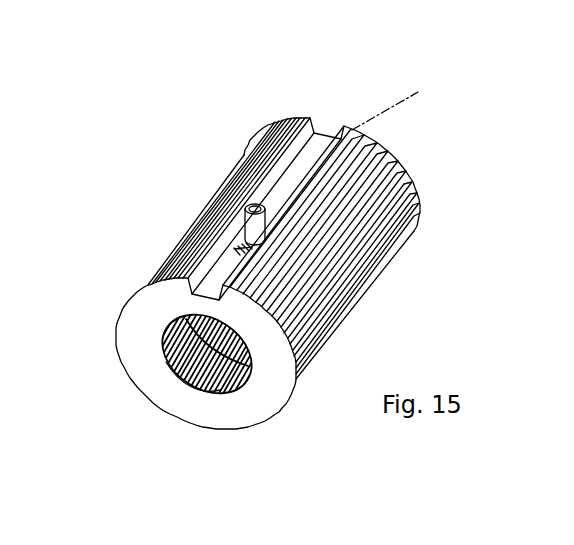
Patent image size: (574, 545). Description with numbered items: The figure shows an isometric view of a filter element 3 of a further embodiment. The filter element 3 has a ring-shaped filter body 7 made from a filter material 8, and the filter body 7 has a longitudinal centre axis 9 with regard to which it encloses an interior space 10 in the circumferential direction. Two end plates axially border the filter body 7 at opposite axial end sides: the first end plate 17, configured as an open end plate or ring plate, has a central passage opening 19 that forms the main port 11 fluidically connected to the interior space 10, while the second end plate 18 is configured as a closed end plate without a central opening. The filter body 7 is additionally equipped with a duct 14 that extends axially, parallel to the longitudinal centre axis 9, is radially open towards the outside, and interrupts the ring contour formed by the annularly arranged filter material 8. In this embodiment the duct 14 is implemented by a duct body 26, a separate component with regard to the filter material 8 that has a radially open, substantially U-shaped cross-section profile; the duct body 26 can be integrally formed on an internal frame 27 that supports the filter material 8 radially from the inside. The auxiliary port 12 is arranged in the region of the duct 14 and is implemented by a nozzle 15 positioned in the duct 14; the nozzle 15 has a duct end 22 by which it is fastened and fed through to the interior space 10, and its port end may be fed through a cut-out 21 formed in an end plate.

The filter element 3 is at (178, 124).
The filter body 7 is at (200, 198).
The filter material 8 is at (340, 309).
The longitudinal centre axis 9 is at (397, 100).
The interior space 10 is at (168, 374).
The main port 11 is at (163, 359).
The auxiliary port 12 is at (249, 203).
The duct 14 is at (315, 150).
The nozzle 15 is at (246, 229).
The first end plate 17 is at (280, 424).
The second end plate 18 is at (416, 183).
The central passage opening 19 is at (217, 391).
The cut-out 21 is at (318, 127).
The duct end 22 is at (242, 251).
The duct body 26 is at (295, 160).
The internal frame 27 is at (205, 388).